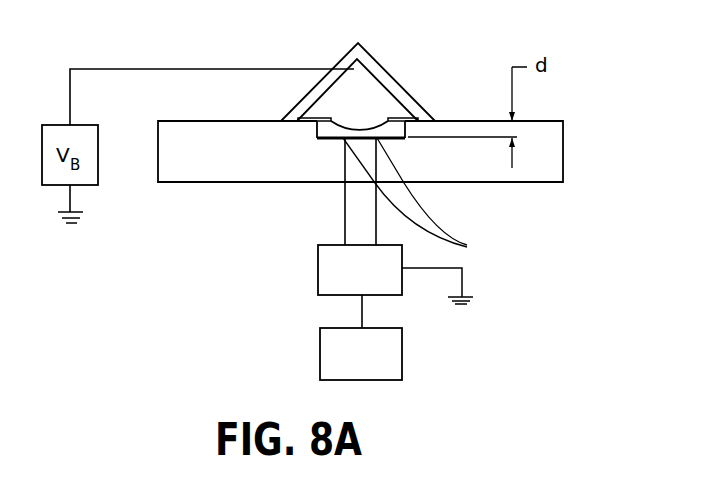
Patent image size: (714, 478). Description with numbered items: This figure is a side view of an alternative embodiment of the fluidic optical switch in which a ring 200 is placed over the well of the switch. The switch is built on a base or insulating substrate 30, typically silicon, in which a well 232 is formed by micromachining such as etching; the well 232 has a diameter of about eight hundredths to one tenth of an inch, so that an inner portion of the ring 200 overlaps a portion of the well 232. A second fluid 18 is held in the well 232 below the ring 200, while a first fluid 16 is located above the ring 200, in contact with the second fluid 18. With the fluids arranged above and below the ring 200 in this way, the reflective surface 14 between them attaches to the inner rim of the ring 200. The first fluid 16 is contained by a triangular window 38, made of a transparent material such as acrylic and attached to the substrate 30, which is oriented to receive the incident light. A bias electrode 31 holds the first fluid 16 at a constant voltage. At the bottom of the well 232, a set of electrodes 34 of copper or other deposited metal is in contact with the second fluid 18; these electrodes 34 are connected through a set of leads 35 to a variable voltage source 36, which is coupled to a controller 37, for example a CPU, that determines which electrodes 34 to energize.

The bias electrode 31 is at (355, 68).
The triangular window 38 is at (369, 55).
The first fluid 16 is at (375, 92).
The ring 200 is at (399, 137).
The insulating substrate 30 is at (563, 145).
The well 232 is at (323, 139).
The reflective surface 14 is at (337, 130).
The second fluid 18 is at (398, 138).
The electrodes 34 is at (423, 200).
The leads 35 is at (375, 205).
The variable voltage source 36 is at (373, 280).
The controller 37 is at (372, 364).